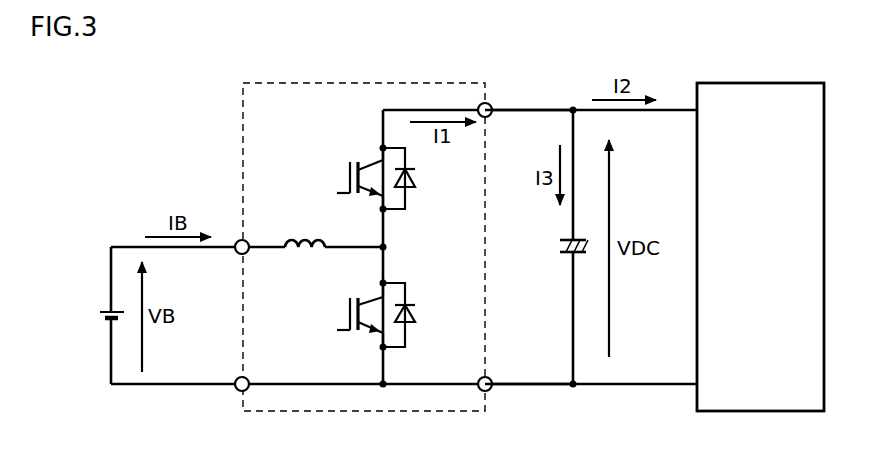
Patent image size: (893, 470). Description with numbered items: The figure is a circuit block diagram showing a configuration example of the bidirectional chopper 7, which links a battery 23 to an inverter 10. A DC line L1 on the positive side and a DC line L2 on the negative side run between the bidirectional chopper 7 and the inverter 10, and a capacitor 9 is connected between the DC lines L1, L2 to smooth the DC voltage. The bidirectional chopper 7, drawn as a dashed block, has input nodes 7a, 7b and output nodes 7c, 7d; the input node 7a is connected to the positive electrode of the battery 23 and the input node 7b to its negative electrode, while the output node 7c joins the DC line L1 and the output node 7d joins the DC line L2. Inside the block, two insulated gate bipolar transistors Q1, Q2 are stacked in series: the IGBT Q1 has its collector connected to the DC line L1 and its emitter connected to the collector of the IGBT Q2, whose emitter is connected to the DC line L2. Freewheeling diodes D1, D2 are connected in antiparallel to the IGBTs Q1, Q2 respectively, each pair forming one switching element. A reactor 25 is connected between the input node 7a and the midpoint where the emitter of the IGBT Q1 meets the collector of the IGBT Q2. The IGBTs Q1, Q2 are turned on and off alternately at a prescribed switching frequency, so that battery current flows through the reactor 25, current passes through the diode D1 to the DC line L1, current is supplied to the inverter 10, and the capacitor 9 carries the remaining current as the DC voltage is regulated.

The bidirectional chopper 7 is at (410, 82).
The input node 7a is at (237, 241).
The input node 7b is at (237, 391).
The output node 7c is at (489, 103).
The output node 7d is at (490, 391).
The battery 23 is at (106, 312).
The reactor 25 is at (301, 236).
The capacitor 9 is at (578, 256).
The inverter 10 is at (770, 412).
The IGBT Q1 is at (354, 168).
The IGBT Q2 is at (354, 303).
The diode D1 is at (409, 192).
The diode D2 is at (410, 327).
The DC line L1 is at (518, 105).
The DC line L2 is at (516, 390).